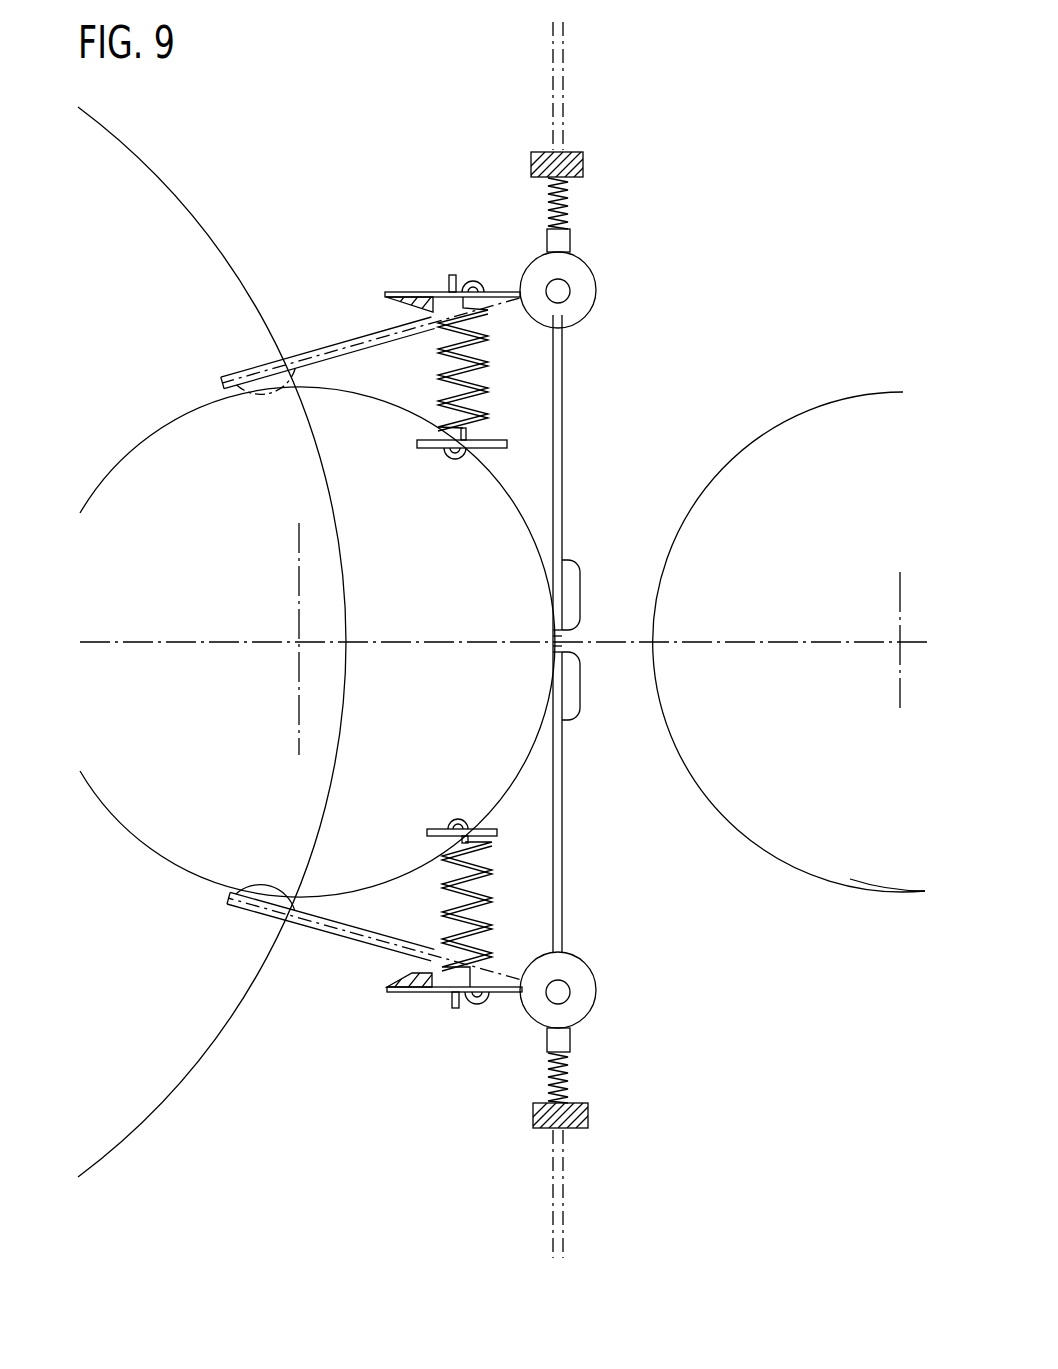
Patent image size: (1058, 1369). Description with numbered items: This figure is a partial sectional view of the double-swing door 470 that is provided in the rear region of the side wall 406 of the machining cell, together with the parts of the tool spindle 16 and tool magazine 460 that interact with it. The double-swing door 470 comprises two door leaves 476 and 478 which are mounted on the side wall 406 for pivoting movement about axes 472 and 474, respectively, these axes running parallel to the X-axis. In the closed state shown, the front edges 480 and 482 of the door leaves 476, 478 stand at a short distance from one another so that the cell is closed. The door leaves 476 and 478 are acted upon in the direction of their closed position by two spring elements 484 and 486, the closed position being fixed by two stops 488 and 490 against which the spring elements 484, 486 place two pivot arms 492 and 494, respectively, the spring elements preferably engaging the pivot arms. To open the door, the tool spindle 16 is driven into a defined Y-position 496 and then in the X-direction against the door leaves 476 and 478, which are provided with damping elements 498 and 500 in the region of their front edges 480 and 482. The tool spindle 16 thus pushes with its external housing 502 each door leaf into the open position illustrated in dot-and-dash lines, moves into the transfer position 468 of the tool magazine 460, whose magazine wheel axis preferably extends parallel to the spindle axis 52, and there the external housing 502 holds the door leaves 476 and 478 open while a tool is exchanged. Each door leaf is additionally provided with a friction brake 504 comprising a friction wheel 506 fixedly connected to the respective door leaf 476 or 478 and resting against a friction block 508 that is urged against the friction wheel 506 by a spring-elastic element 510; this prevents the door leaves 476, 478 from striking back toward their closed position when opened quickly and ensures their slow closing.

The side wall 406 is at (566, 44).
The tool magazine 460 is at (172, 176).
The transfer position 468 is at (292, 638).
The door leaf 476 is at (242, 366).
The door leaf 478 is at (250, 906).
The stop 488 is at (425, 292).
The stop 490 is at (446, 993).
The pivot arm 492 is at (451, 274).
The pivot arm 494 is at (458, 1008).
The spring element 484 is at (438, 366).
The spring element 486 is at (442, 905).
The front edge 480 is at (554, 644).
The front edge 482 is at (558, 648).
The spring-elastic element 510 is at (570, 205).
The friction brake 504 is at (600, 214).
The friction block 508 is at (575, 243).
The friction wheel 506 is at (580, 272).
The axis 472 is at (568, 294).
The axis 474 is at (569, 995).
The double-swing door 470 is at (586, 480).
The damping element 498 is at (573, 578).
The damping element 500 is at (578, 698).
The Y-position 496 is at (725, 640).
The spindle axis 52 is at (898, 641).
The external housing 502 is at (868, 392).
The tool spindle 16 is at (906, 885).